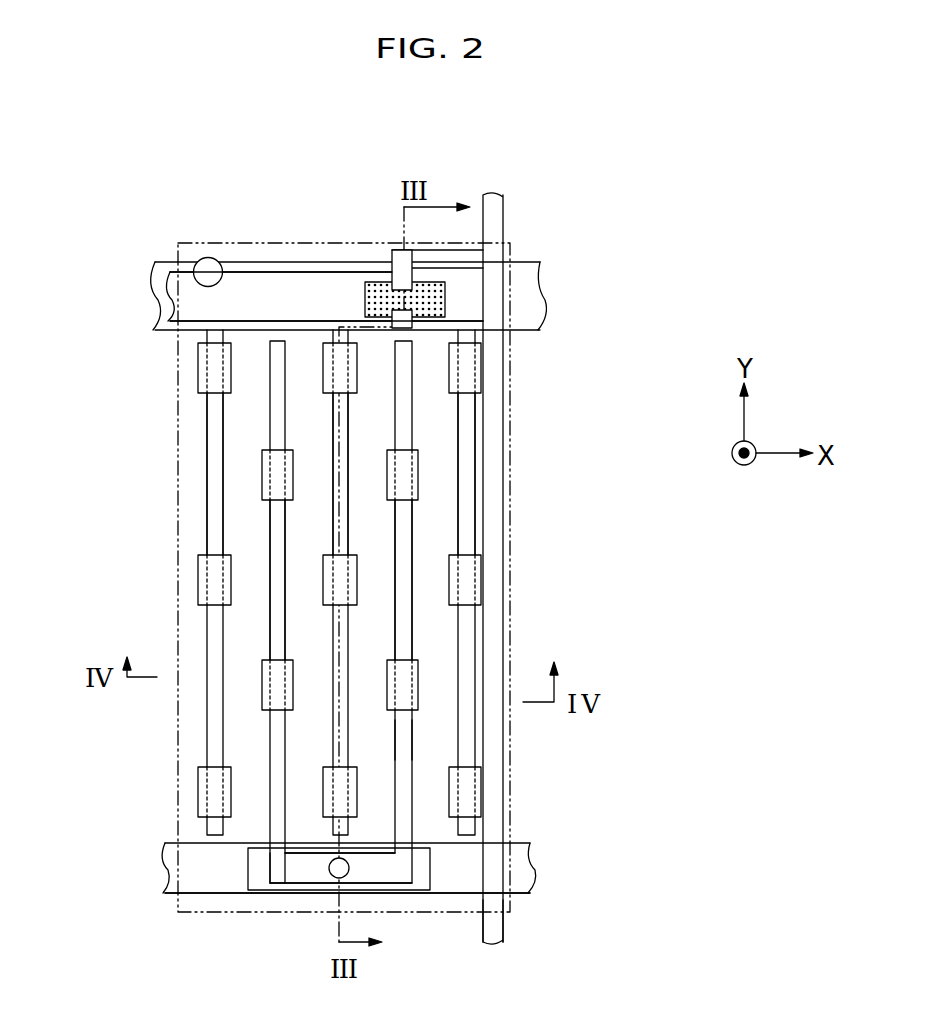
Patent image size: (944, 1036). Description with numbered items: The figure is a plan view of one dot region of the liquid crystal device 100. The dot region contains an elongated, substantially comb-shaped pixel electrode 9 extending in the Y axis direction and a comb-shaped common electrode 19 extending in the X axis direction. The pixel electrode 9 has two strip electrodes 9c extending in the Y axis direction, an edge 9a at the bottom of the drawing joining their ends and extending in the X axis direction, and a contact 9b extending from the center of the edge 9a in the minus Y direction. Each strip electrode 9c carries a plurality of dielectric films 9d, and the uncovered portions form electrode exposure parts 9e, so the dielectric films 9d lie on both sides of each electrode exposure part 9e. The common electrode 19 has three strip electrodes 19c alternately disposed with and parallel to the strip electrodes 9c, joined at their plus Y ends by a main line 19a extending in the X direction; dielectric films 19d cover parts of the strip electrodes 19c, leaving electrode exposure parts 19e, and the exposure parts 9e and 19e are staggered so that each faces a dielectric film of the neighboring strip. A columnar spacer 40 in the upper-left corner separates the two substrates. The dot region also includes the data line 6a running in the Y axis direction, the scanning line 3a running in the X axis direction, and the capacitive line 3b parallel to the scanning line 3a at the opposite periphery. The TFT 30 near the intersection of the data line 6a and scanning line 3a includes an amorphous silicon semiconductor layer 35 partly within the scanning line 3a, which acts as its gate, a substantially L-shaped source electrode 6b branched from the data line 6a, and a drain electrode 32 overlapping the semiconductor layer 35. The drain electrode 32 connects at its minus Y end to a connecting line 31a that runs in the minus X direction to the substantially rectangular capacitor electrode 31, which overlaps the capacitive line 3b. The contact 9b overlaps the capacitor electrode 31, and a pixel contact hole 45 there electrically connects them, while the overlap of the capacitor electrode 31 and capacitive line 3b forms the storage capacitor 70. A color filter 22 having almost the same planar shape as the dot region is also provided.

The scanning line 3a is at (166, 262).
The capacitive line 3b is at (168, 845).
The data line 6a is at (503, 930).
The source electrode 6b is at (452, 258).
The pixel electrode 9 is at (351, 665).
The edge 9a is at (250, 878).
The contact 9b is at (290, 872).
The strip electrode 9c is at (351, 549).
The dielectric film 9d is at (262, 665).
The electrode exposure part 9e is at (400, 437).
The common electrode 19 is at (358, 496).
The main line 19a is at (167, 330).
The strip electrode 19c is at (358, 580).
The dielectric film 19d is at (323, 575).
The electrode exposure part 19e is at (333, 410).
The color filter 22 is at (178, 357).
The TFT 30 is at (367, 239).
The capacitor electrode 31 is at (263, 893).
The connecting line 31a is at (413, 738).
The drain electrode 32 is at (397, 312).
The semiconductor layer 35 is at (390, 280).
The columnar spacer 40 is at (210, 258).
The pixel contact hole 45 is at (348, 872).
The storage capacitor 70 is at (180, 877).
The liquid crystal device 100 is at (572, 216).